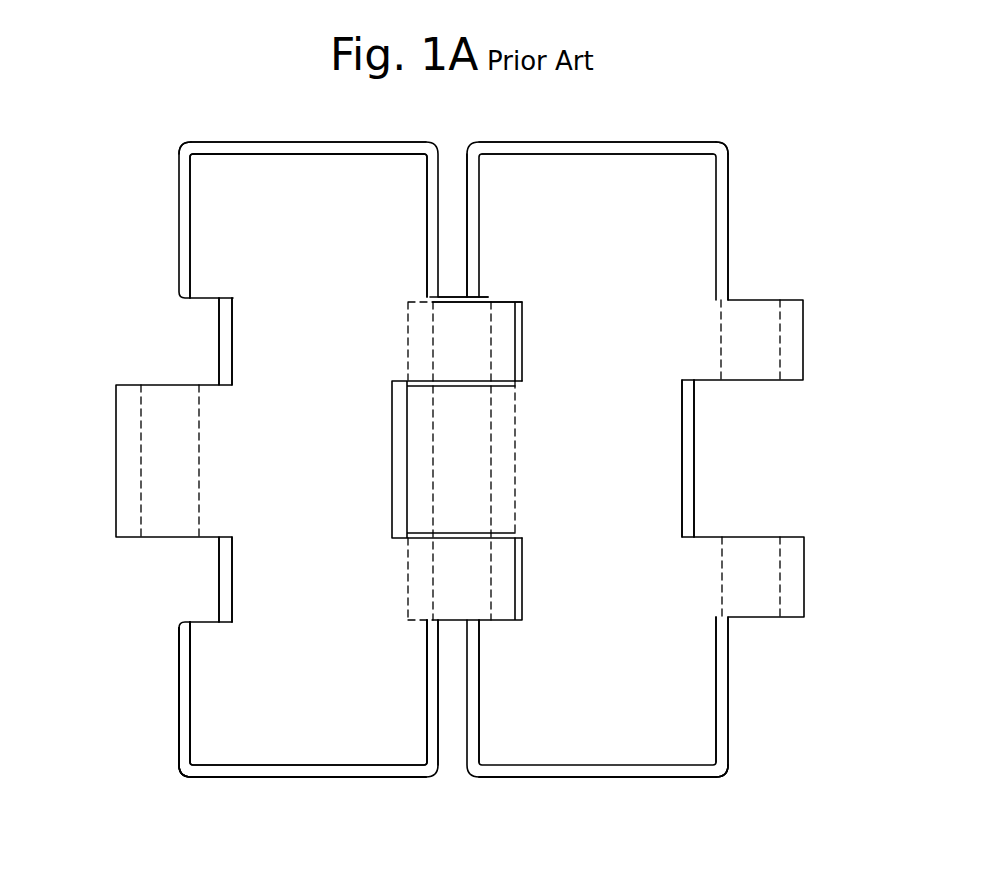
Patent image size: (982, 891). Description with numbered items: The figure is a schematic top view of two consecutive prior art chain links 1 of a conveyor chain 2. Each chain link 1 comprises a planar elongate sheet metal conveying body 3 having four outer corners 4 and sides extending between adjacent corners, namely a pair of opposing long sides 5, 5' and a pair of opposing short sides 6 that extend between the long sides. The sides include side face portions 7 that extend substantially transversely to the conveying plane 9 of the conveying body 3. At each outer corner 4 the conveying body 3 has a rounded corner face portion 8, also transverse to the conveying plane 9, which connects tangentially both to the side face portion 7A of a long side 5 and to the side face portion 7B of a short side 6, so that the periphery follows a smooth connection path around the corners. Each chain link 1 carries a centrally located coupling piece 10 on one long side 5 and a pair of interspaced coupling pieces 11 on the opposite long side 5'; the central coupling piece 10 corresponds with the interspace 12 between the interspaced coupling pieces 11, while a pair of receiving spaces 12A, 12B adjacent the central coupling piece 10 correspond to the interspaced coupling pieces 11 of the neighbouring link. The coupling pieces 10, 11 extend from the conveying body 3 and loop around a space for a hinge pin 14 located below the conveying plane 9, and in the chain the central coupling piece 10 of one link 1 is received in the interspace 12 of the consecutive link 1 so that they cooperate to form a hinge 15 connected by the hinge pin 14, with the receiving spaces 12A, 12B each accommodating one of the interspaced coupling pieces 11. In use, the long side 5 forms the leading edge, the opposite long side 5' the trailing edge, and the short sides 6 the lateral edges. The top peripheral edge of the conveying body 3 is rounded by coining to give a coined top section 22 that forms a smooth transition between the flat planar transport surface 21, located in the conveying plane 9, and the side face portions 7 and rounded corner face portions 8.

The chain link 1 is at (177, 753).
The conveyor chain 2 is at (133, 770).
The conveying body 3 is at (343, 737).
The outer corners 4 is at (197, 163).
The long side 5 is at (626, 511).
The opposite long side 5' is at (271, 425).
The short sides 6 is at (322, 142).
The side face portions 7 is at (178, 727).
The side face portion of a long side 7A is at (468, 691).
The side face portion of a short side 7B is at (287, 778).
The corner face portion 8 is at (183, 148).
The conveying plane 9 is at (292, 704).
The centrally located coupling piece 10 is at (127, 442).
The interspaced coupling pieces 11 is at (790, 337).
The interspace 12 is at (736, 472).
The receiving space 12A is at (208, 340).
The receiving space 12B is at (208, 575).
The hinge pin 14 is at (453, 293).
The hinge 15 is at (373, 297).
The flat planar transport surface 21 is at (328, 704).
The coined top section 22 is at (607, 152).